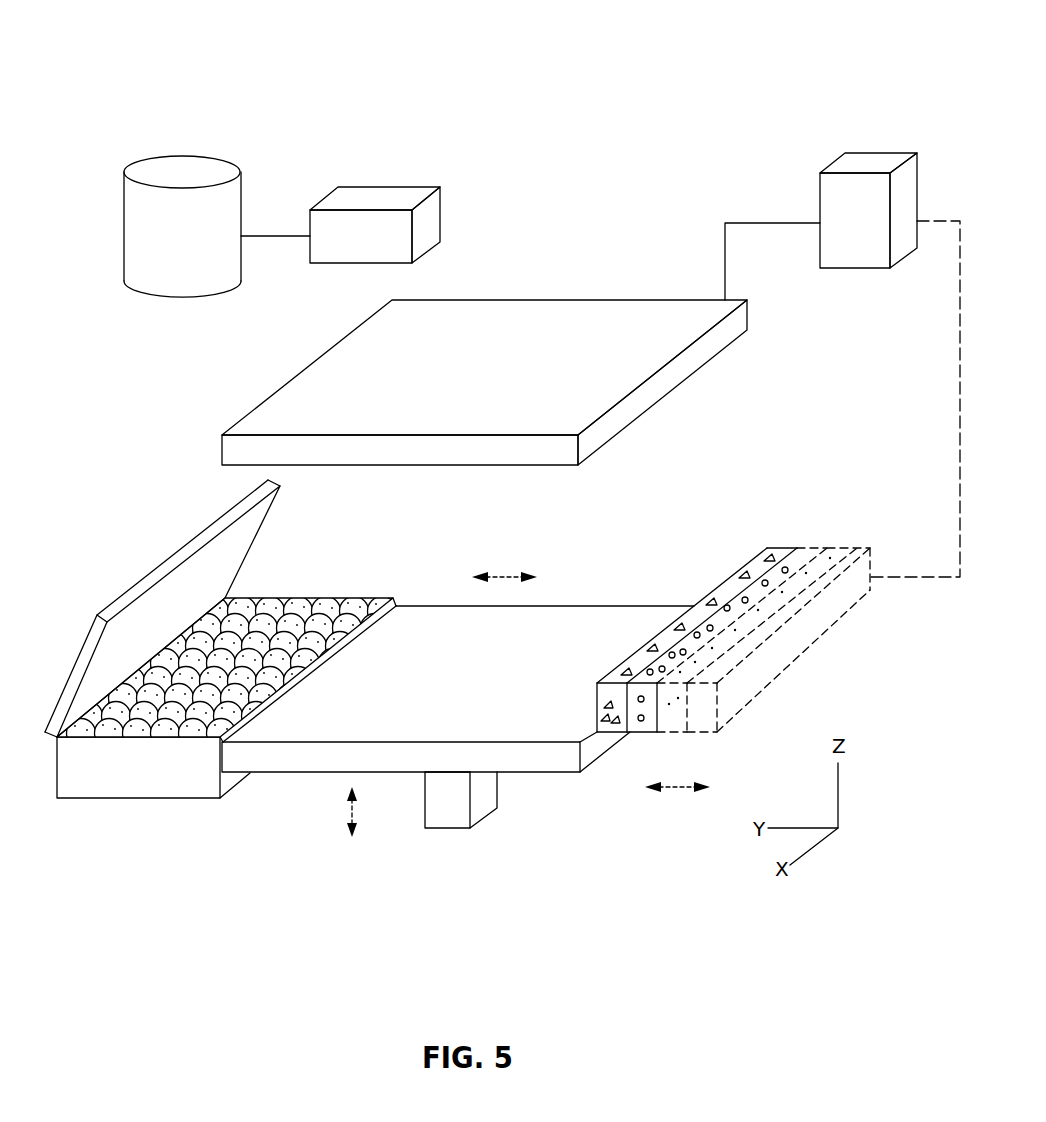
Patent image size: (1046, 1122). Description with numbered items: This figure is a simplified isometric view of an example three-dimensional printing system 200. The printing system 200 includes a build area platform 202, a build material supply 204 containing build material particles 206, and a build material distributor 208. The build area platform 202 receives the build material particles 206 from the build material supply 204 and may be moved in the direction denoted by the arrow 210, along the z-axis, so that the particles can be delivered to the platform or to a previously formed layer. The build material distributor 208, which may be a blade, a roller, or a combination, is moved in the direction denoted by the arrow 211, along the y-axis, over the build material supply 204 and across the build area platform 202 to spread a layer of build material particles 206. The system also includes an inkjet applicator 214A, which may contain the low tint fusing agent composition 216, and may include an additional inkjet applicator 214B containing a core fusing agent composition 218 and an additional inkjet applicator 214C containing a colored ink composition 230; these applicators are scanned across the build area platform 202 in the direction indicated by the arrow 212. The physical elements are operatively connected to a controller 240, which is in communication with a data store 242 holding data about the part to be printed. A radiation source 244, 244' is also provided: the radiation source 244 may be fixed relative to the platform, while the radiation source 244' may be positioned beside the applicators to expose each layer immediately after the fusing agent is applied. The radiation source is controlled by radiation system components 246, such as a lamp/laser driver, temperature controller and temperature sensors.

The 3D printing system 200 is at (392, 68).
The build area platform 202 is at (520, 773).
The build material supply 204 is at (158, 800).
The build material particles 206 is at (78, 740).
The build material distributor 208 is at (150, 572).
The arrow 210 is at (347, 815).
The arrow 211 is at (512, 573).
The arrow 212 is at (687, 790).
The inkjet applicator 214A is at (775, 547).
The additional inkjet applicator 214B is at (810, 547).
The additional inkjet applicator 214C is at (830, 547).
The low tint fusing agent composition 216 is at (745, 574).
The core fusing agent composition 218 is at (640, 723).
The colored ink composition 230 is at (675, 720).
The controller 240 is at (242, 195).
The data store 242 is at (393, 185).
The radiation source 244 is at (484, 355).
The radiation source 244' is at (815, 636).
The radiation system components 246 is at (853, 270).